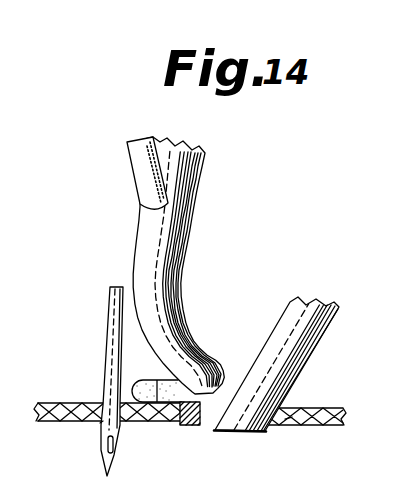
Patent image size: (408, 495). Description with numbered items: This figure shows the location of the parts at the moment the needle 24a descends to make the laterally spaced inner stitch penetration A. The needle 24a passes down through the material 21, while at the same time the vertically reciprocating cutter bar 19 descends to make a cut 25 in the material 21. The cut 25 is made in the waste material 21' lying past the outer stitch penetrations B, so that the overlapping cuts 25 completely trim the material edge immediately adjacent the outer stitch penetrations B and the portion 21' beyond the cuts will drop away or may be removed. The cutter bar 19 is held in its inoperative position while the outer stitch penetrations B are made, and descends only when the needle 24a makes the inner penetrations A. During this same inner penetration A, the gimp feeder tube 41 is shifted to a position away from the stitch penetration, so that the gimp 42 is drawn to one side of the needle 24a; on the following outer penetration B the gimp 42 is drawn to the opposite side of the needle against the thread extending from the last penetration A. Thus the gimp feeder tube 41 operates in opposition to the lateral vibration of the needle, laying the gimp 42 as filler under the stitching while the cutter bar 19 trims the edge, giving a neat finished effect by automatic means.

The gimp feeder tube 41 is at (183, 231).
The cutter bar 19 is at (282, 343).
The needle 24a is at (115, 327).
The material 21 is at (107, 395).
The waste material 21' is at (293, 400).
The cut 25 is at (289, 421).
The gimp 42 is at (150, 417).
The inner stitch penetration A is at (100, 423).
The outer stitch penetration B is at (188, 425).